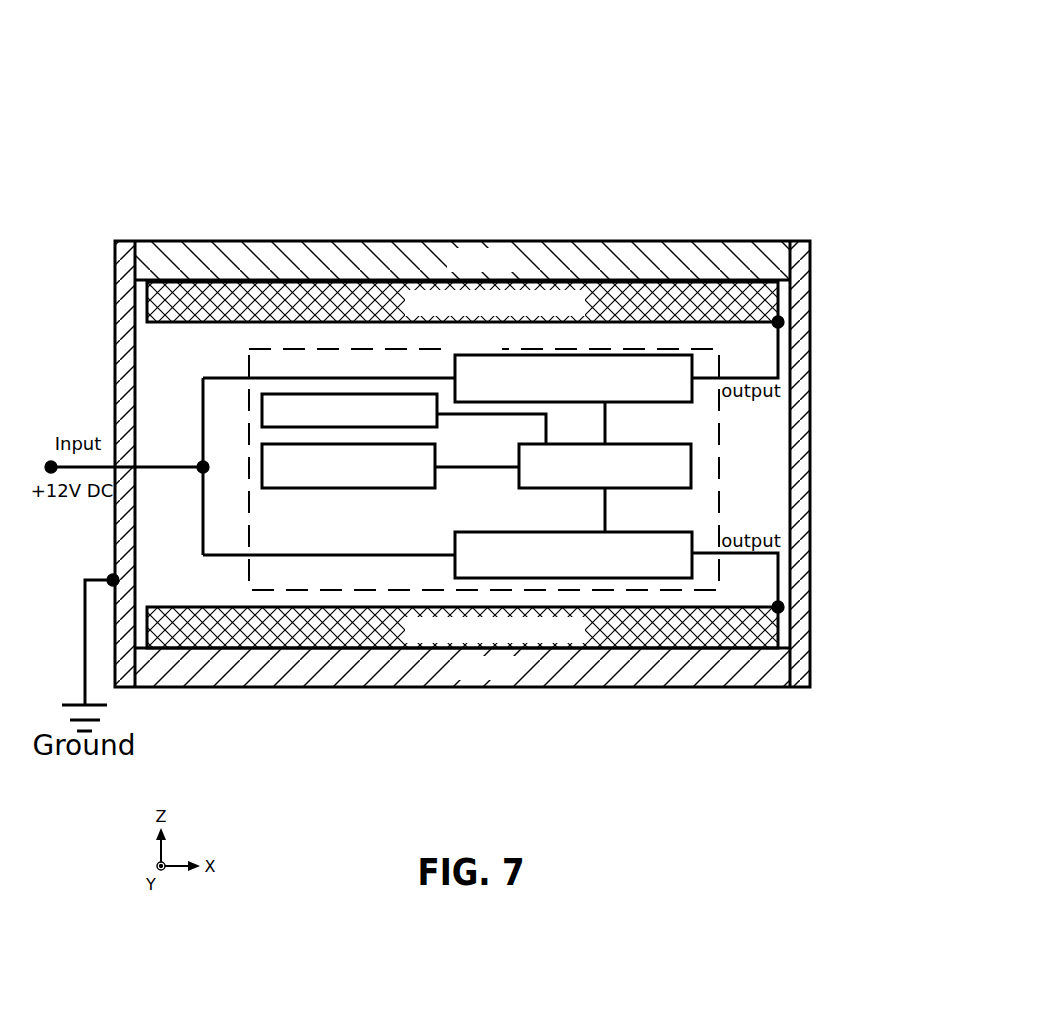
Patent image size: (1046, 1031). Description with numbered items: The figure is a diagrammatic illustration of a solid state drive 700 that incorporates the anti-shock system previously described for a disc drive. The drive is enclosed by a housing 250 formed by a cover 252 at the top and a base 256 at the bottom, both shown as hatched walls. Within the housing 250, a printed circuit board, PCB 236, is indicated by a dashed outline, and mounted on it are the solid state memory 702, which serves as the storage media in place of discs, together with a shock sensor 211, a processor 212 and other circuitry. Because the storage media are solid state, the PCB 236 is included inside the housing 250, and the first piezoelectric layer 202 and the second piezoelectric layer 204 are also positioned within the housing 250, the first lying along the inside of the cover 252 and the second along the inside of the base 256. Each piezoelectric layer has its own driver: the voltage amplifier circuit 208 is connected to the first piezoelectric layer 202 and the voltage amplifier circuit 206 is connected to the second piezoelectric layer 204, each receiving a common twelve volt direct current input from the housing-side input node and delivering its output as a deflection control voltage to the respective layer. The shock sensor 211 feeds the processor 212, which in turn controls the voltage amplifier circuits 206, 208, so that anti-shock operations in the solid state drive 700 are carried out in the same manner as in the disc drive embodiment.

The solid state drive 700 is at (756, 82).
The first piezoelectric layer 202 is at (677, 290).
The second piezoelectric layer 204 is at (693, 630).
The cover 252 is at (754, 258).
The base 256 is at (750, 672).
The housing 250 is at (96, 558).
The PCB 236 is at (300, 349).
The solid state memory 702 is at (349, 410).
The shock sensor 211 is at (287, 483).
The processor 212 is at (533, 480).
The voltage amplifier circuit 208 is at (670, 390).
The voltage amplifier circuit 206 is at (643, 537).